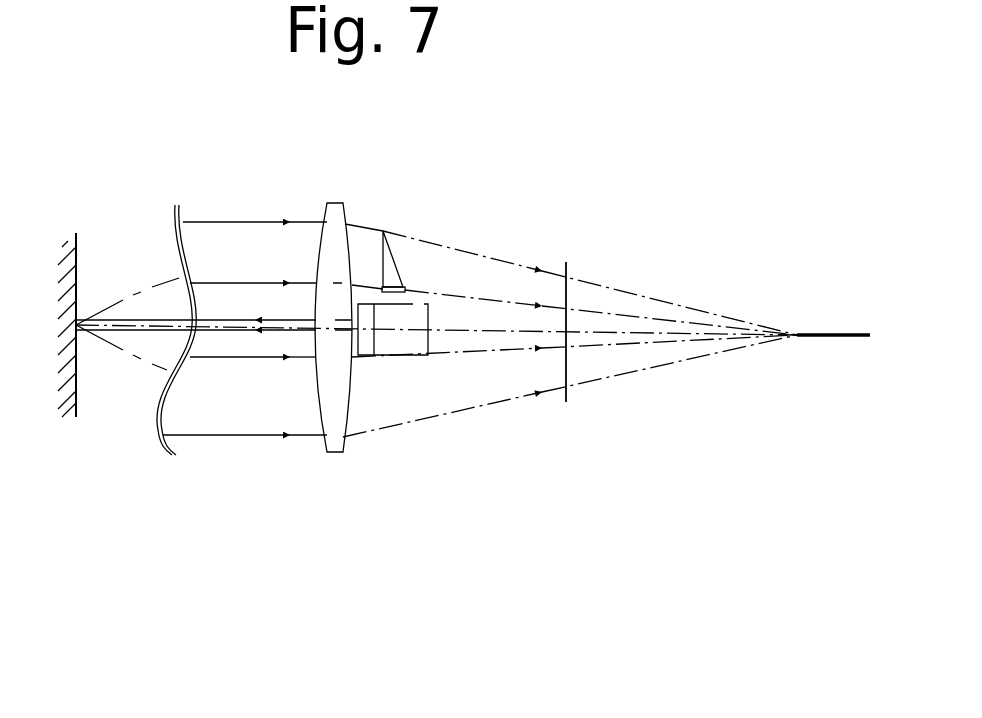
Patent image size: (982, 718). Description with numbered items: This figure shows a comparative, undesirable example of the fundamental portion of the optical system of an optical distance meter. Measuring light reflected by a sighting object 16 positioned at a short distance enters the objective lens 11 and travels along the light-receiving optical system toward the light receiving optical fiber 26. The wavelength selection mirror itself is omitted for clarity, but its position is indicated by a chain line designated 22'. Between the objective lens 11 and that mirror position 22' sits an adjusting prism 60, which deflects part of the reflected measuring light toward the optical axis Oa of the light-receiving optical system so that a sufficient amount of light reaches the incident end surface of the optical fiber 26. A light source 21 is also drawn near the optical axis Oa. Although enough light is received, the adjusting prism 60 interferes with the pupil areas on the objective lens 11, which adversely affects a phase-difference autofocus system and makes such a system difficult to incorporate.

The sighting object 16 is at (77, 268).
The objective lens 11 is at (333, 207).
The adjusting prism 60 is at (385, 263).
The light source 21 is at (400, 342).
The position of the wavelength selection mirror 22' is at (601, 313).
The light receiving optical fiber 26 is at (845, 333).
The optical axis Oa is at (481, 333).